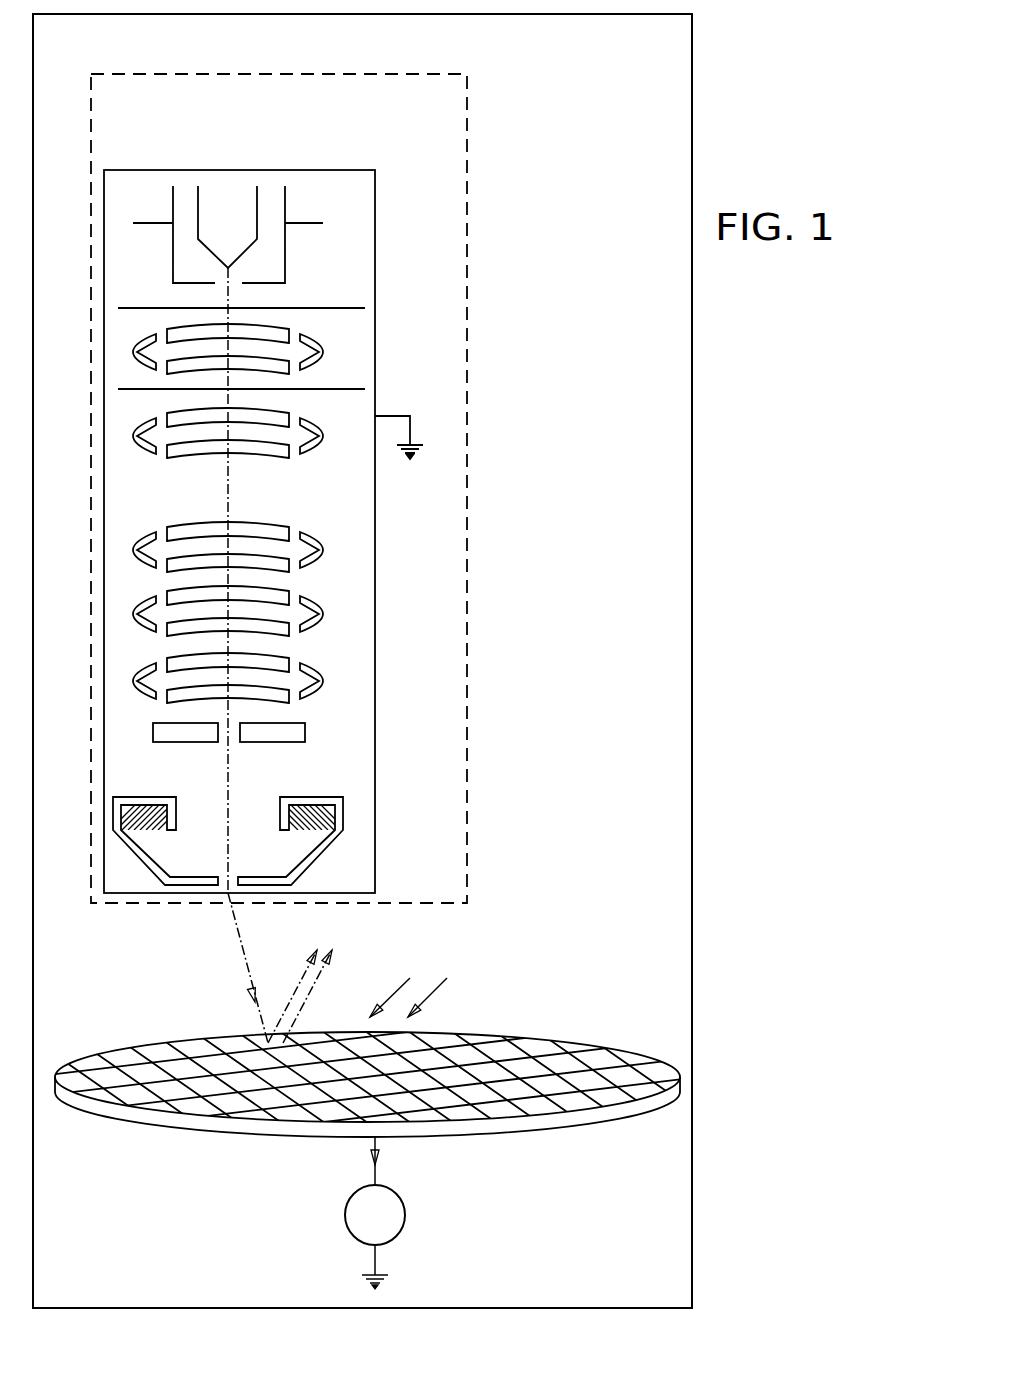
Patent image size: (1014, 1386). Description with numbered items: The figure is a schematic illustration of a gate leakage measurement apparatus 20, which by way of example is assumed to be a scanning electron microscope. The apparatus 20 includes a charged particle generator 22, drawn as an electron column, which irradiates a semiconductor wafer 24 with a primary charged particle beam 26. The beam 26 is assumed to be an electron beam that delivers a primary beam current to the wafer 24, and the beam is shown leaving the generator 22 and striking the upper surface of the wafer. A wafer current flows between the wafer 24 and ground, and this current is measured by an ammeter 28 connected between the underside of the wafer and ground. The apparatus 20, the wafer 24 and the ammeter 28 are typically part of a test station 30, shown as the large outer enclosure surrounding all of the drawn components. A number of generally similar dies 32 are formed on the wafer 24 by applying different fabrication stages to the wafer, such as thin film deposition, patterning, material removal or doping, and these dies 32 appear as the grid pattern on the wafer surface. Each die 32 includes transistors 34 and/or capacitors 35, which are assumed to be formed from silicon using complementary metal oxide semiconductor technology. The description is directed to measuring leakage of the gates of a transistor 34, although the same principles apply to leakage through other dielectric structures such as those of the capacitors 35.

The gate leakage measurement apparatus 20 is at (467, 278).
The charged particle generator 22 is at (375, 338).
The semiconductor wafer 24 is at (366, 1067).
The primary charged particle beam 26 is at (245, 967).
The ammeter 28 is at (405, 1217).
The test station 30 is at (692, 465).
The die 32 is at (493, 1033).
The transistor 34 is at (364, 995).
The capacitor 35 is at (396, 982).